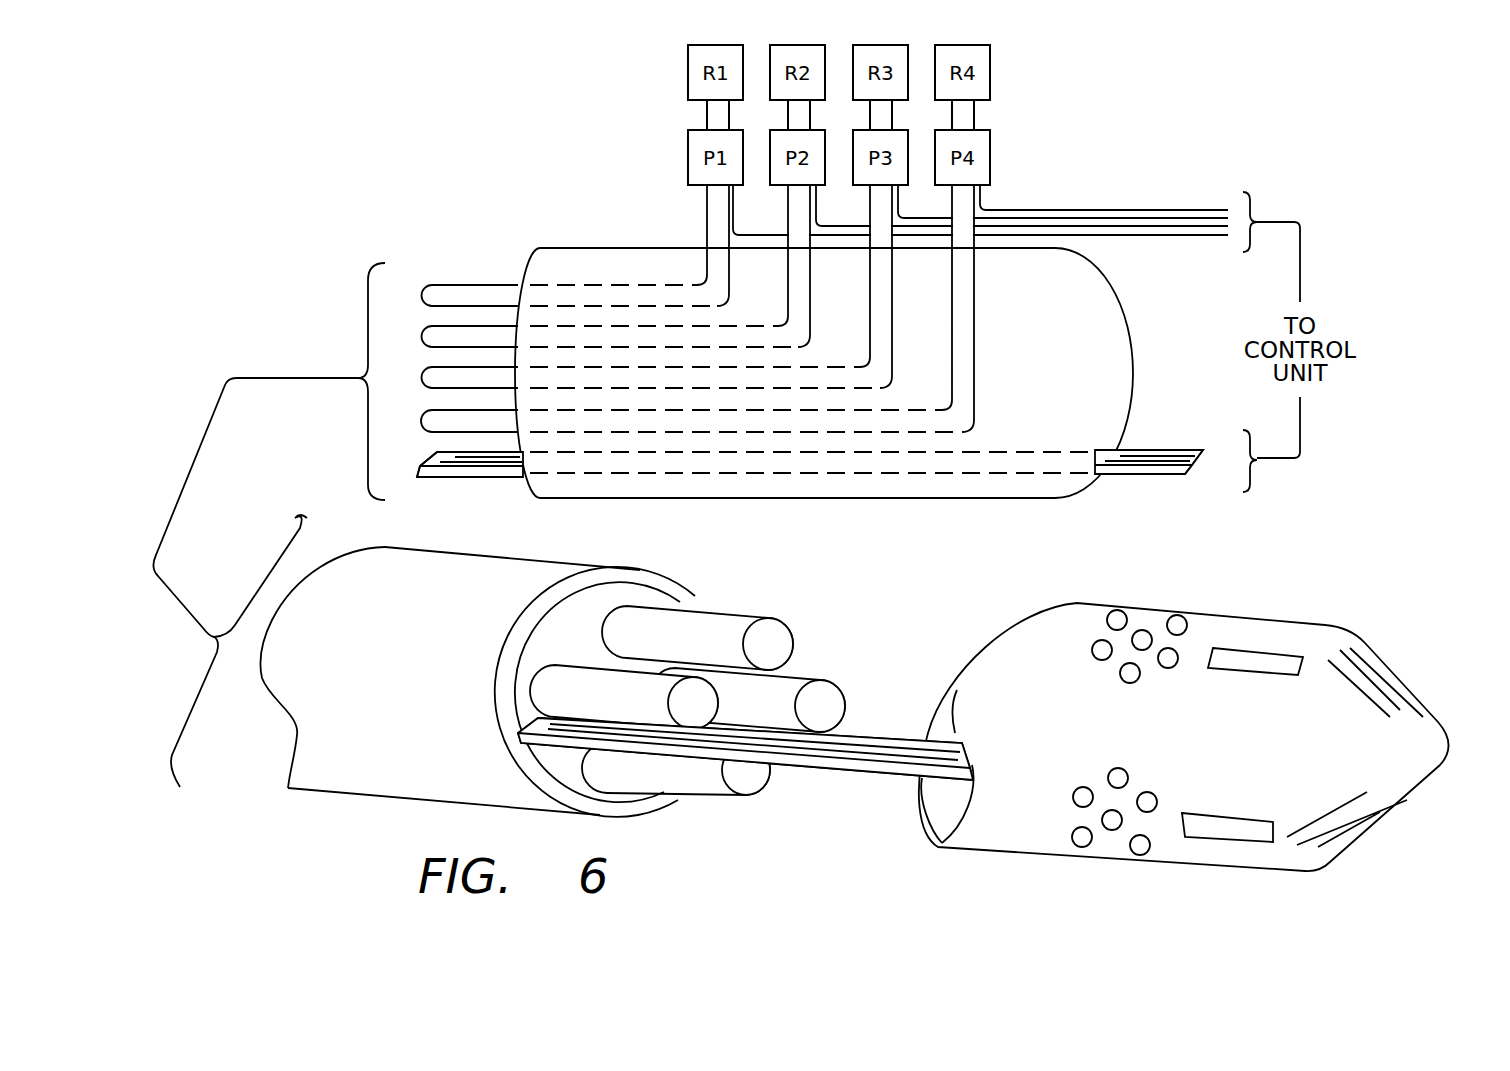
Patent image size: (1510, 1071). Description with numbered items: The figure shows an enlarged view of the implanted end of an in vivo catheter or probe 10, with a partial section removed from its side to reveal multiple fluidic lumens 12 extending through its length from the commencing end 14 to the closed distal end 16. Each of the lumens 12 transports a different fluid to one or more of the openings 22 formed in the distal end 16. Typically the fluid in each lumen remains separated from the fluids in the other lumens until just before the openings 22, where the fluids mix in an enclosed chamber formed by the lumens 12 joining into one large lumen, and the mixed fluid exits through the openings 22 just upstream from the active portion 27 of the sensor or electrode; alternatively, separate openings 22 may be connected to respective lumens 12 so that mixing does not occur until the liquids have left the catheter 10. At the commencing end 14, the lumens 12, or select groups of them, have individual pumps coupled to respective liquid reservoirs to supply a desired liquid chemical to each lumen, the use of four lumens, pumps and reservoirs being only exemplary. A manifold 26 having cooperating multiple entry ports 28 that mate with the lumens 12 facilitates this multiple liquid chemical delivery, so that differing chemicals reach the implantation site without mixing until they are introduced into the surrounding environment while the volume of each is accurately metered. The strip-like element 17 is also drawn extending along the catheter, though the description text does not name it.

The catheter or probe 10 is at (317, 792).
The lumens 12 is at (452, 284).
The commencing end 14 is at (405, 262).
The closed distal end 16 is at (1426, 624).
The flat strip 17" 17 is at (467, 478).
The openings 22 is at (1178, 614).
The manifold 26 is at (889, 499).
The active portion of the sensor or electrode 27 is at (1267, 662).
The entry ports 28 is at (950, 207).